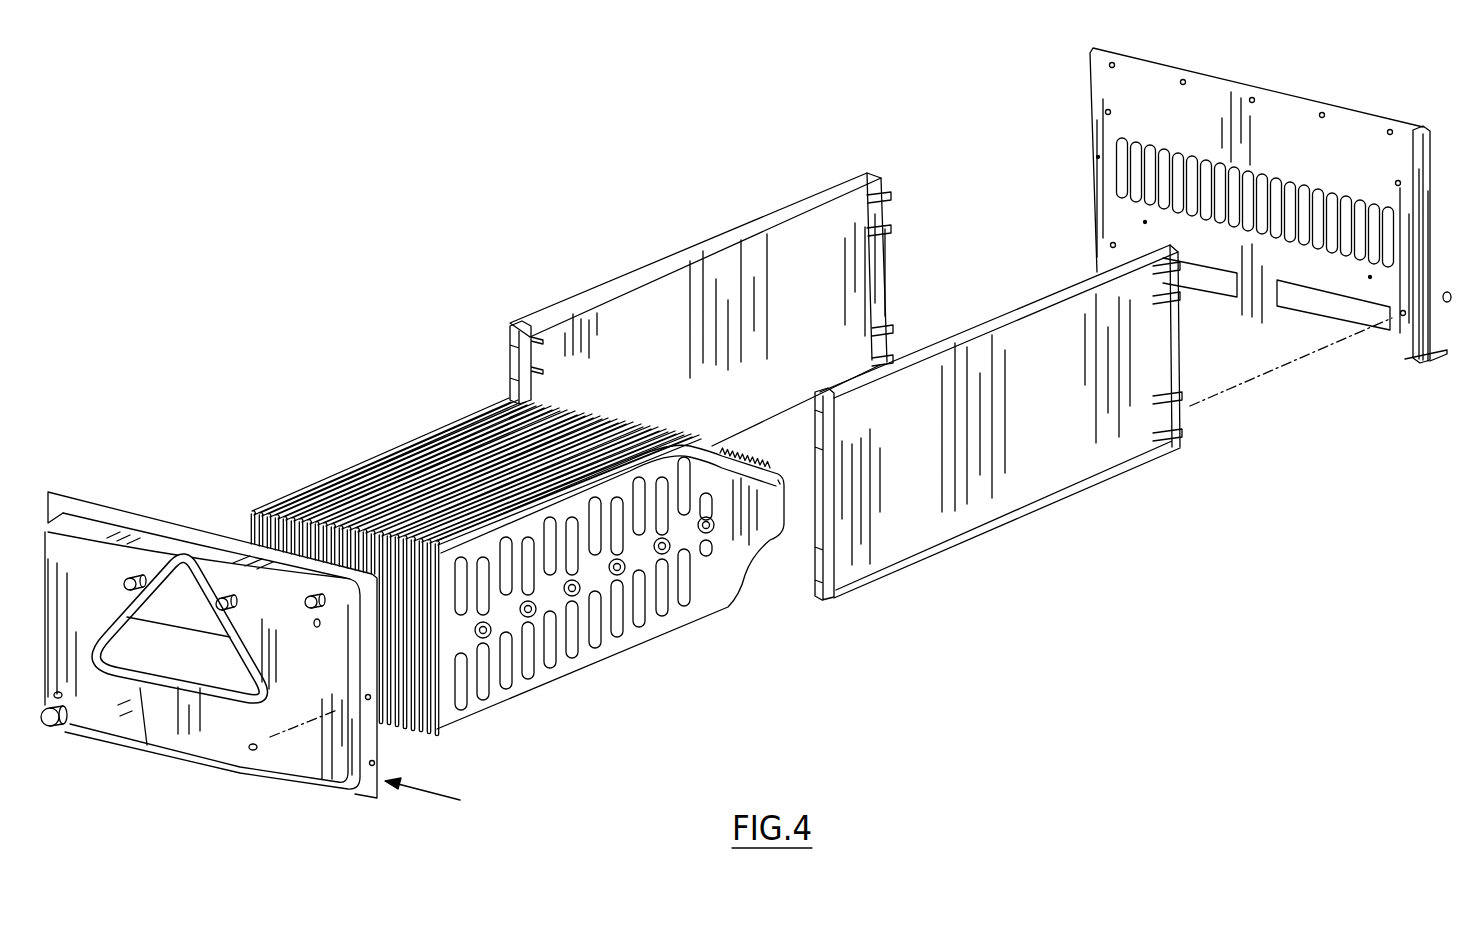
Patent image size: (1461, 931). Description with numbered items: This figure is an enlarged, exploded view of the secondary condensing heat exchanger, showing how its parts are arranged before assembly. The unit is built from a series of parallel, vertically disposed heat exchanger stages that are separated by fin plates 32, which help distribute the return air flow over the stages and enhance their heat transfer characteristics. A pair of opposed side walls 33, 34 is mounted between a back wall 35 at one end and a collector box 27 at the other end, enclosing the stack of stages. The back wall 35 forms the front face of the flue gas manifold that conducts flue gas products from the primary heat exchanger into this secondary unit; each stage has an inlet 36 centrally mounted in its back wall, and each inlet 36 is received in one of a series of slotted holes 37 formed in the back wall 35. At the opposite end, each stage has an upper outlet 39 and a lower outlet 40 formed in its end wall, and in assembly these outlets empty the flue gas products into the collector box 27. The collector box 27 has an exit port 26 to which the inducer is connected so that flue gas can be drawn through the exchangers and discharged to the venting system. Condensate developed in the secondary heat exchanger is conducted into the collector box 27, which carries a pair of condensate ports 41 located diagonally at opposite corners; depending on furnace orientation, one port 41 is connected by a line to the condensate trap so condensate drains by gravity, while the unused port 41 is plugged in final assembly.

The exit port 26 is at (182, 672).
The collector box 27 is at (439, 798).
The fin plates 32 is at (716, 444).
The side wall 33 is at (733, 228).
The side wall 34 is at (1053, 457).
The back wall 35 is at (1275, 93).
The inlet 36 is at (783, 523).
The slotted holes 37 is at (1303, 183).
The upper outlet 39 is at (285, 487).
The lower outlet 40 is at (440, 726).
The condensate ports 41 is at (312, 622).